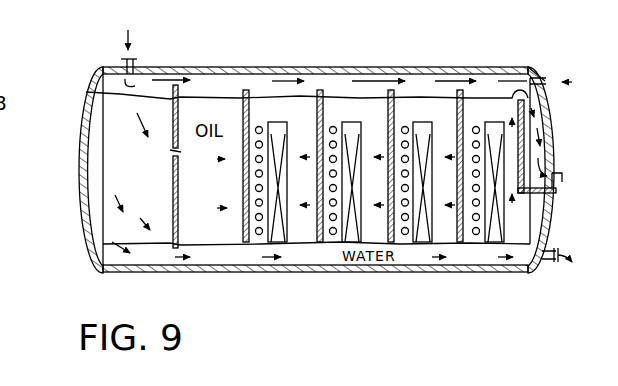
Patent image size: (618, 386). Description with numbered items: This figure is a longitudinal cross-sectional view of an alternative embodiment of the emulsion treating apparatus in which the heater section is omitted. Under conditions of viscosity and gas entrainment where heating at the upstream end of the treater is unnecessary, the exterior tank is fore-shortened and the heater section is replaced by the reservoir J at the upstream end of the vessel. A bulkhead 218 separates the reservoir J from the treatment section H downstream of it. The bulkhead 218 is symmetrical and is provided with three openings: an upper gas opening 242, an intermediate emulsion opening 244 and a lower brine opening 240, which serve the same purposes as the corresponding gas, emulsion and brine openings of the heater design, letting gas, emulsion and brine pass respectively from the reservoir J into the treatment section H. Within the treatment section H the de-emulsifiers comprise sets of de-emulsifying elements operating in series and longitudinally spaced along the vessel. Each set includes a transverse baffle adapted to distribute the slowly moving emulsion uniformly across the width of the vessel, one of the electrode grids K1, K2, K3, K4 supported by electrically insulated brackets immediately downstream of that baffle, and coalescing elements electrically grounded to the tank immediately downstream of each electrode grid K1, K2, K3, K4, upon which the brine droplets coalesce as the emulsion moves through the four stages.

The bulkhead 218 is at (170, 105).
The upper gas opening 242 is at (187, 71).
The intermediate emulsion opening 244 is at (167, 152).
The lower brine opening 240 is at (170, 258).
The reservoir J is at (113, 147).
The treatment section H is at (330, 83).
The electrode grid K1 is at (260, 127).
The electrode grid K2 is at (333, 127).
The electrode grid K3 is at (405, 127).
The electrode grid K4 is at (475, 127).